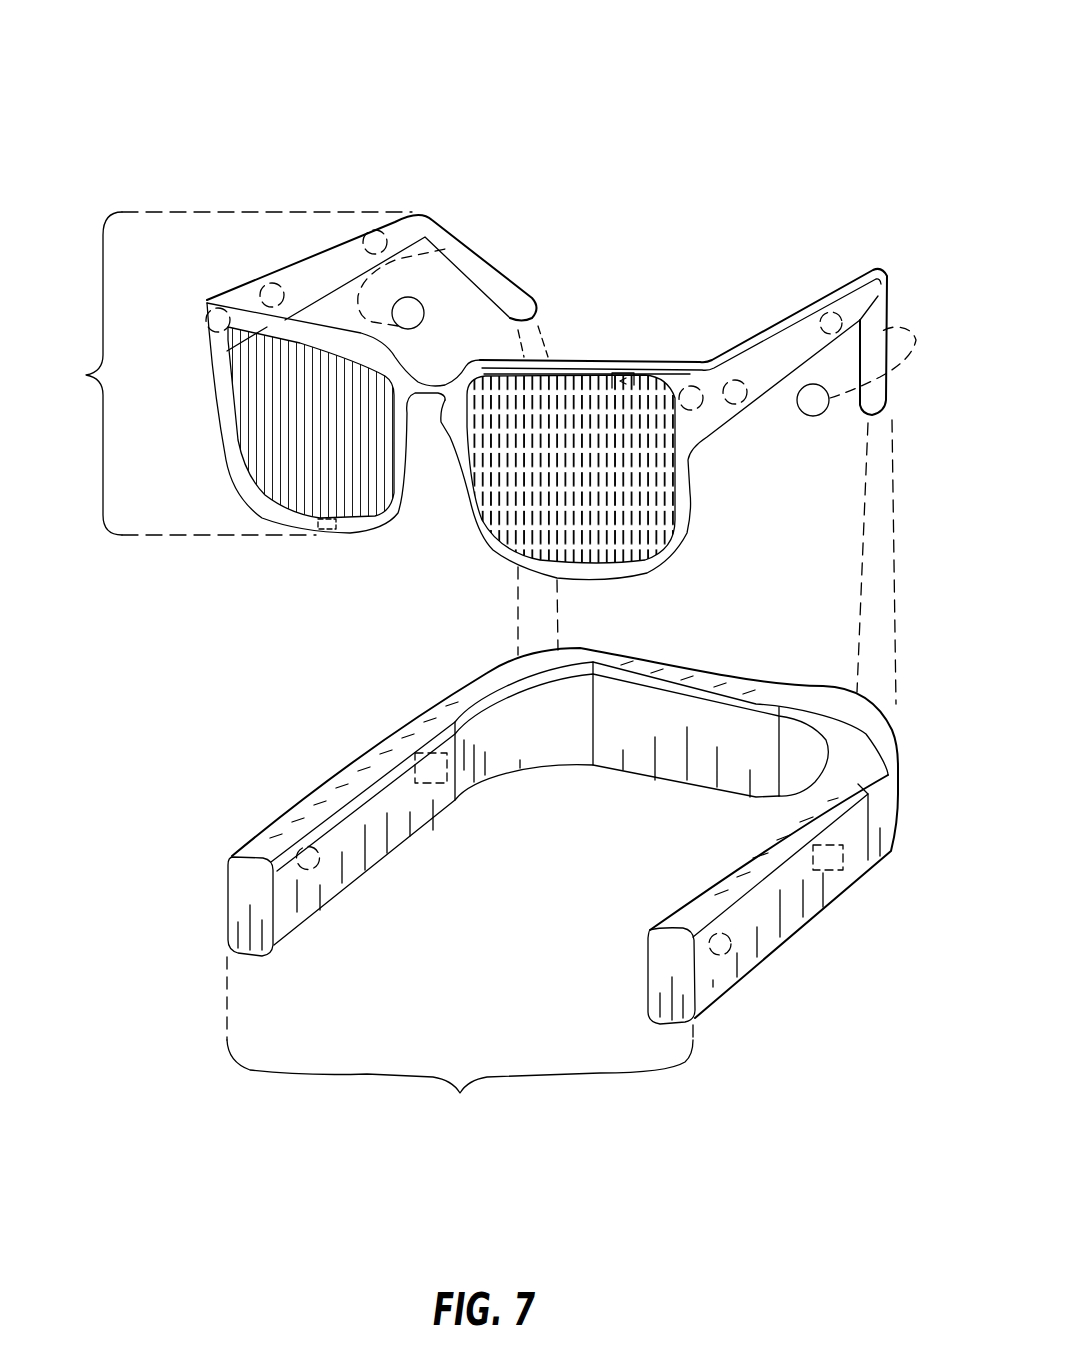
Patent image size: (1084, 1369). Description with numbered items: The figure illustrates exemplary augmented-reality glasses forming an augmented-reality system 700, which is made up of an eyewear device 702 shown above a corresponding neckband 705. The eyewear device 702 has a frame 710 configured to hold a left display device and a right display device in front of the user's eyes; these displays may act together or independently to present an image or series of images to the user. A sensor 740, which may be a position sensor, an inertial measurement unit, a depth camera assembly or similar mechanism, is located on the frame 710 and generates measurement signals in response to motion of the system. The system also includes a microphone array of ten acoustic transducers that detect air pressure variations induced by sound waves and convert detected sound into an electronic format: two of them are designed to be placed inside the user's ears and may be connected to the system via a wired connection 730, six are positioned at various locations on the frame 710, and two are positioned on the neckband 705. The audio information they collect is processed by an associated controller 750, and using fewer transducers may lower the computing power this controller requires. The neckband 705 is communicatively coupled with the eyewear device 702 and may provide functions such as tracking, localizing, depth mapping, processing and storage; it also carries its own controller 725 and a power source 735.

The augmented-reality system 700 is at (128, 103).
The eyewear device 702 is at (479, 396).
The neckband 705 is at (562, 884).
The frame 710 is at (428, 225).
The controller 725 is at (828, 868).
The wired connection 730 is at (883, 578).
The power source 735 is at (433, 773).
The sensor 740 is at (320, 528).
The controller 750 is at (612, 368).